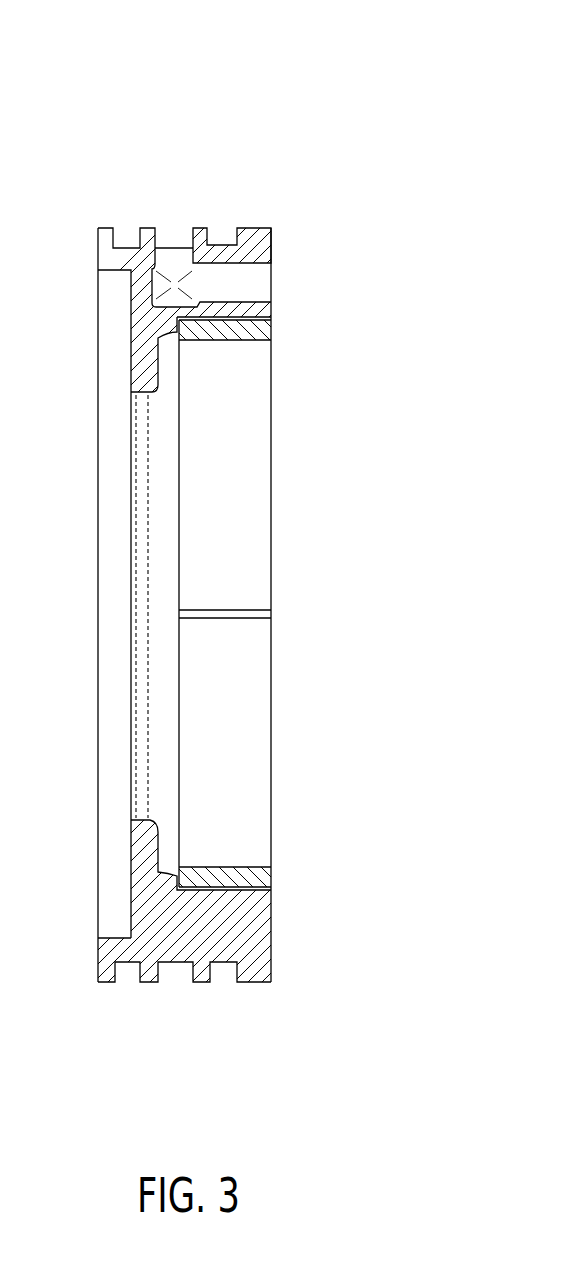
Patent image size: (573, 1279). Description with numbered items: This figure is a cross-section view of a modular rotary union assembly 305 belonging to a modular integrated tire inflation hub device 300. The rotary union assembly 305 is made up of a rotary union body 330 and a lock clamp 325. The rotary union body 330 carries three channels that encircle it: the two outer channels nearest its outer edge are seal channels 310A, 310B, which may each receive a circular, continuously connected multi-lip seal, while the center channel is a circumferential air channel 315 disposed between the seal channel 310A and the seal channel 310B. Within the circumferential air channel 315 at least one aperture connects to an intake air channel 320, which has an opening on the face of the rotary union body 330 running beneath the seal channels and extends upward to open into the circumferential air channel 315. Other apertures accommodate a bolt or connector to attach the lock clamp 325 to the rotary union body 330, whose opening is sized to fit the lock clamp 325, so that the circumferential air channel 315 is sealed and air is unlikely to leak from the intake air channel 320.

The modular integrated tire inflation hub device 300 is at (403, 88).
The modular rotary union assembly 305 is at (293, 1028).
The seal channel 310A is at (223, 238).
The seal channel 310B is at (127, 238).
The circumferential air channel 315 is at (177, 237).
The intake air channel 320 is at (263, 285).
The lock clamp 325 is at (263, 468).
The rotary union body 330 is at (263, 927).